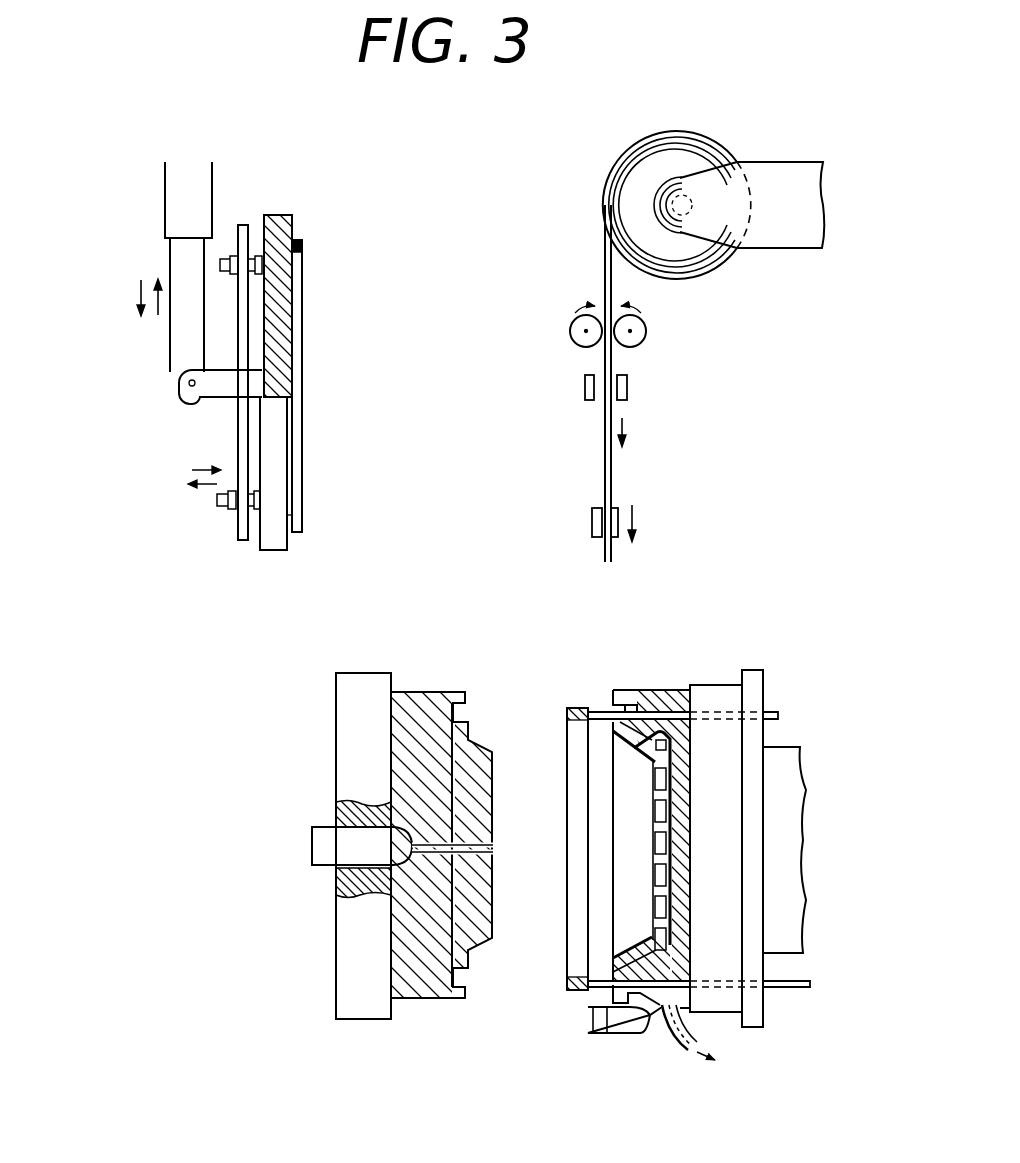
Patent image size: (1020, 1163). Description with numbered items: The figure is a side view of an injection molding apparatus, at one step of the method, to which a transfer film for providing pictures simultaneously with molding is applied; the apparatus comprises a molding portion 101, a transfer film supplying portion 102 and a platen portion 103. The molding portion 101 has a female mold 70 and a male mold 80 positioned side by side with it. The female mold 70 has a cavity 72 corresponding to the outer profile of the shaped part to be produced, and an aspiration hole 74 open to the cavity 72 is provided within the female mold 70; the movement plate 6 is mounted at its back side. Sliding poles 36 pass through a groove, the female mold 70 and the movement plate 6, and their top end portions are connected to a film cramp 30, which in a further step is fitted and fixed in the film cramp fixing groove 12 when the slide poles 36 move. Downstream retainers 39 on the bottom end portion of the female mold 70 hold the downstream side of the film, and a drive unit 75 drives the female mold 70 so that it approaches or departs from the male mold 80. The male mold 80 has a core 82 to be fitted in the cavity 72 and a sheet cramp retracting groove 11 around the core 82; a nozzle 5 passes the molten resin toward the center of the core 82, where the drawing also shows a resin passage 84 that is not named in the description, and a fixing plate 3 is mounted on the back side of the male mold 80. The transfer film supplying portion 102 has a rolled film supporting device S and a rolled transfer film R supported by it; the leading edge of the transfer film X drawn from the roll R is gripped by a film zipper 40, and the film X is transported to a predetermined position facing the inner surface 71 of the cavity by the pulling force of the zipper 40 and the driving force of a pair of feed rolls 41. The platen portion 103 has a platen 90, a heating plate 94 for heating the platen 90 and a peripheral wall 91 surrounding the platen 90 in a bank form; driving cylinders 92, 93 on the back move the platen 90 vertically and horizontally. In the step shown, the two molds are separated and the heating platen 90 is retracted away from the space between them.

The molding portion 101 is at (495, 1080).
The transfer film supplying portion 102 is at (768, 418).
The platen portion 103 is at (100, 282).
The fixing plate 3 is at (365, 676).
The nozzle 5 is at (318, 840).
The movement plate 6 is at (719, 690).
The sheet cramp retracting groove 11 is at (465, 703).
The film cramp fixing groove 12 is at (612, 712).
The film cramp 30 is at (568, 990).
The sliding poles 36 is at (665, 712).
The downstream retainers 39 is at (590, 1027).
The film zipper 40 is at (617, 398).
The feed rolls 41 is at (617, 340).
The female mold 70 is at (628, 690).
The inner surface of the cavity 71 is at (650, 822).
The cavity 72 is at (627, 857).
The aspiration hole 74 is at (655, 930).
The drive unit 75 is at (788, 852).
The male mold 80 is at (418, 690).
The core 82 is at (470, 950).
The runner channel 84 is at (493, 850).
The platen 90 is at (304, 290).
The peripheral wall 91 is at (298, 240).
The driving cylinder 92 is at (217, 500).
The driving cylinder 93 is at (170, 368).
The heating plate 94 is at (278, 215).
The rolled transfer film R is at (631, 160).
The rolled film supporting device S is at (797, 170).
The transfer film X is at (604, 470).